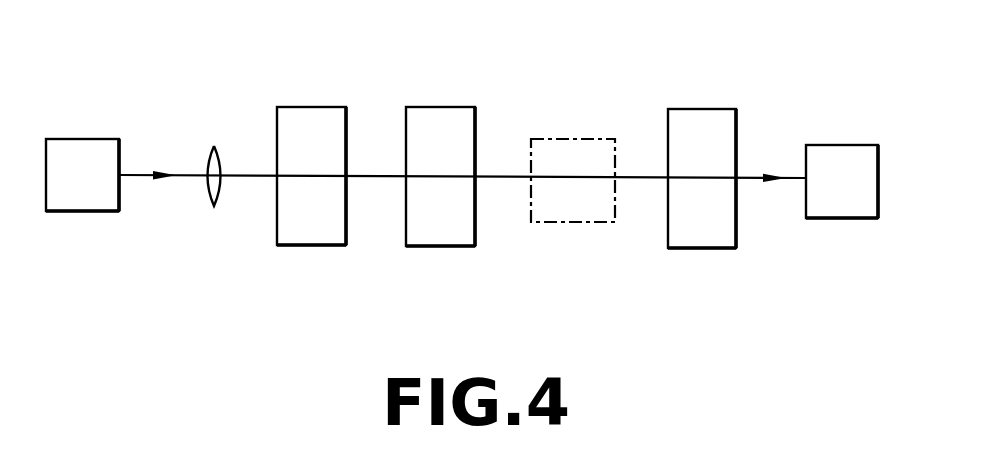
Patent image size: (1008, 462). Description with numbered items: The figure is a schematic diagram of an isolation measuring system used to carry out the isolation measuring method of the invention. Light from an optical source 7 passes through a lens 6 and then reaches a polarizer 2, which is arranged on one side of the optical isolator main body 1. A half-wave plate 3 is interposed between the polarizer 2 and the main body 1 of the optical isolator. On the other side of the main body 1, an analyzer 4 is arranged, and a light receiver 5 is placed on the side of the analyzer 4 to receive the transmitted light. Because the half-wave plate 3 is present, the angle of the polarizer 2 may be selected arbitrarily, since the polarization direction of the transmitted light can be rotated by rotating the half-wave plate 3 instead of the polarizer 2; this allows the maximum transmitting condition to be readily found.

The optical isolator main body 1 is at (588, 139).
The polarizer 2 is at (305, 107).
The half-wave plate 3 is at (440, 107).
The analyzer 4 is at (705, 109).
The light receiver 5 is at (840, 145).
The lens 6 is at (212, 148).
The optical source 7 is at (76, 139).